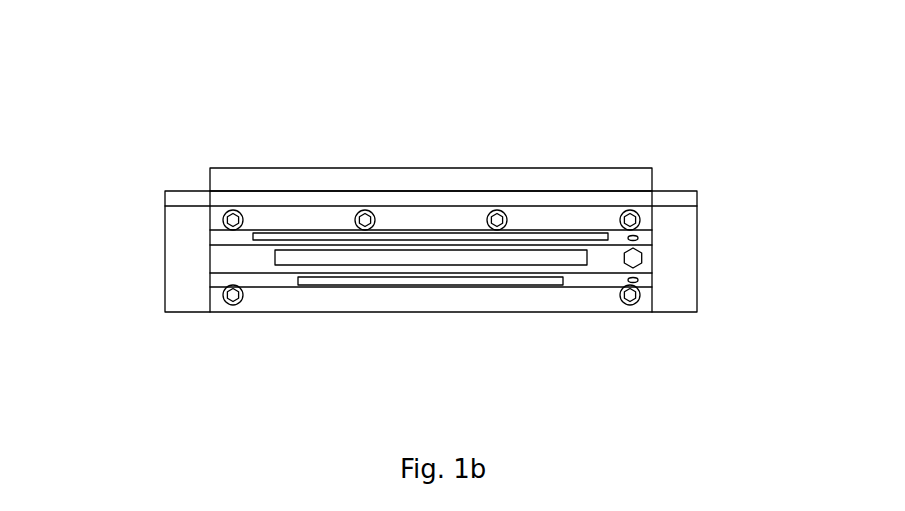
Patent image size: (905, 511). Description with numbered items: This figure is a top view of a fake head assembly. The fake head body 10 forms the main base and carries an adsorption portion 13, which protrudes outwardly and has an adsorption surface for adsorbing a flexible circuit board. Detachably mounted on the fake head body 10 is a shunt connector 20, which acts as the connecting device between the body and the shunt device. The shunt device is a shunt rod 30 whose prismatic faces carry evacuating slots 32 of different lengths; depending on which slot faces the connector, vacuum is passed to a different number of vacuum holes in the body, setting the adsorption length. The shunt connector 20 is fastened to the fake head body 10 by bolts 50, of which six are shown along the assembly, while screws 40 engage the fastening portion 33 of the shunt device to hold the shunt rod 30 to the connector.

The fake head body 10 is at (673, 280).
The adsorption portion 13 is at (422, 178).
The shunt connector 20 is at (307, 220).
The shunt rod 30 is at (238, 262).
The evacuating slot 32 is at (377, 257).
The fastening portion of the shunt device 33 is at (637, 238).
The screw 40 is at (635, 260).
The bolt 50 is at (227, 218).